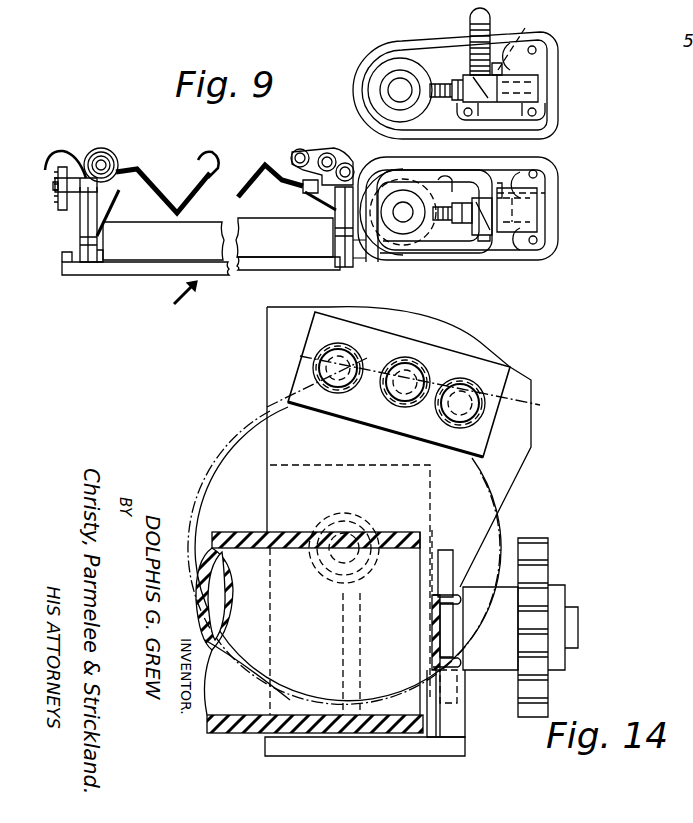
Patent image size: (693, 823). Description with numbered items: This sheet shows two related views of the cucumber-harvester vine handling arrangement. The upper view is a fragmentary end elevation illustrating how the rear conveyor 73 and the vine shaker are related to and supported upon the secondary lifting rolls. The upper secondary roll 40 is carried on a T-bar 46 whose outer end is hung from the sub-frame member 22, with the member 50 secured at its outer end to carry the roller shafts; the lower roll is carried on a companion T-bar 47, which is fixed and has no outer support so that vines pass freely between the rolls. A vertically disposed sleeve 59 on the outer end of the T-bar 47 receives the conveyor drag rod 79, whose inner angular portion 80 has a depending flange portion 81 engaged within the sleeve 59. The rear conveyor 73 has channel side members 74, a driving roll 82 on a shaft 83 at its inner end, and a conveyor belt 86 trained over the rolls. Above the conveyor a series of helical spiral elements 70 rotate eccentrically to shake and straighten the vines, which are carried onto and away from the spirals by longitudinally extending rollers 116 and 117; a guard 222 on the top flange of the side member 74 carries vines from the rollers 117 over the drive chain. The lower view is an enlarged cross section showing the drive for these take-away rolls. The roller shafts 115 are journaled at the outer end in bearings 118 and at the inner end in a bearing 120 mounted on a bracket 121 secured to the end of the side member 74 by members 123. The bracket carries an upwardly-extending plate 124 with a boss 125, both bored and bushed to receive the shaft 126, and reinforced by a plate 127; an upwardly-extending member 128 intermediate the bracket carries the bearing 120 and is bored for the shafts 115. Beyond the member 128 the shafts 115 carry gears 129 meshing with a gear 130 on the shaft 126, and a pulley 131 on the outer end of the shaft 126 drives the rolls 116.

In FIG. 14, the sub-frame member 22 is at (425, 754).
In FIG. 9, the upper secondary roll 40 is at (558, 105).
In FIG. 9, the T-bar 46 is at (519, 42).
In FIG. 9, the T-bar 47 is at (548, 194).
In FIG. 9, the member 50 is at (456, 82).
In FIG. 9, the sleeve 59 is at (472, 230).
In FIG. 9, the spiral element 70 is at (186, 155).
In FIG. 9, the rear conveyor 73 is at (172, 309).
In FIG. 9, the side member 74 is at (76, 275).
In FIG. 14, the side member 74 is at (458, 590).
In FIG. 9, the conveyor drag rod 79 is at (135, 275).
In FIG. 9, the inner angular portion 80 is at (443, 180).
In FIG. 9, the depending flange portion 81 is at (497, 232).
In FIG. 14, the driving roll 82 is at (218, 532).
In FIG. 14, the shaft 83 is at (578, 640).
In FIG. 9, the conveyor belt 86 is at (184, 218).
In FIG. 14, the shaft 115 is at (405, 382).
In FIG. 9, the roller 116 is at (296, 155).
In FIG. 9, the roller 117 is at (118, 156).
In FIG. 9, the bearing 118 is at (325, 152).
In FIG. 14, the bearing 120 is at (465, 355).
In FIG. 14, the bracket 121 is at (520, 372).
In FIG. 14, the member 123 is at (457, 710).
In FIG. 14, the plate 124 is at (376, 465).
In FIG. 14, the boss 125 is at (338, 508).
In FIG. 14, the shaft 126 is at (372, 515).
In FIG. 14, the plate 127 is at (358, 640).
In FIG. 14, the member 128 is at (267, 398).
In FIG. 14, the gear 129 is at (345, 355).
In FIG. 14, the gear 130 is at (234, 447).
In FIG. 14, the pulley 131 is at (248, 432).
In FIG. 9, the guard 222 is at (84, 153).